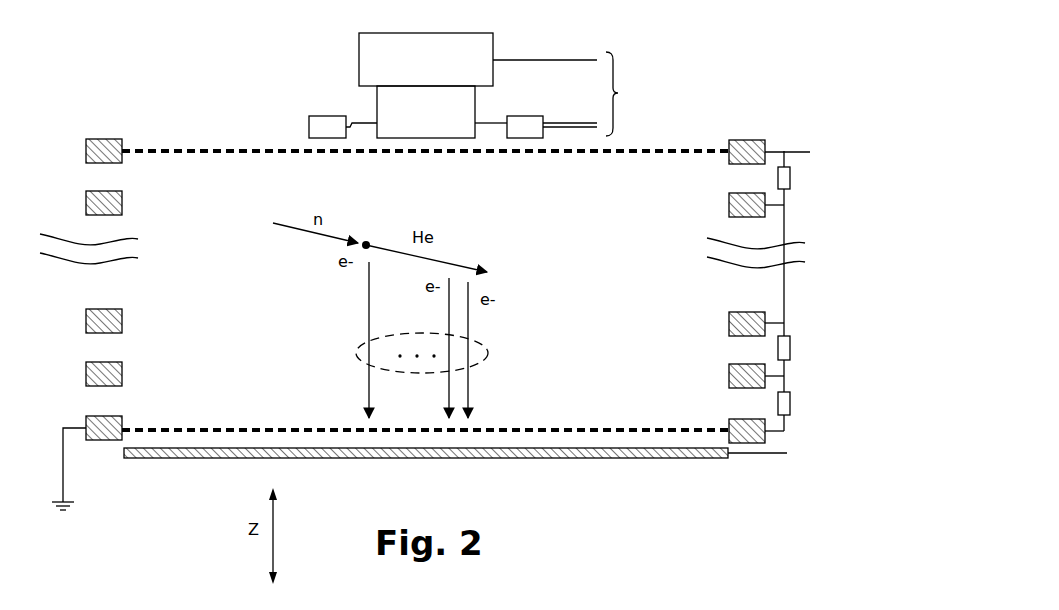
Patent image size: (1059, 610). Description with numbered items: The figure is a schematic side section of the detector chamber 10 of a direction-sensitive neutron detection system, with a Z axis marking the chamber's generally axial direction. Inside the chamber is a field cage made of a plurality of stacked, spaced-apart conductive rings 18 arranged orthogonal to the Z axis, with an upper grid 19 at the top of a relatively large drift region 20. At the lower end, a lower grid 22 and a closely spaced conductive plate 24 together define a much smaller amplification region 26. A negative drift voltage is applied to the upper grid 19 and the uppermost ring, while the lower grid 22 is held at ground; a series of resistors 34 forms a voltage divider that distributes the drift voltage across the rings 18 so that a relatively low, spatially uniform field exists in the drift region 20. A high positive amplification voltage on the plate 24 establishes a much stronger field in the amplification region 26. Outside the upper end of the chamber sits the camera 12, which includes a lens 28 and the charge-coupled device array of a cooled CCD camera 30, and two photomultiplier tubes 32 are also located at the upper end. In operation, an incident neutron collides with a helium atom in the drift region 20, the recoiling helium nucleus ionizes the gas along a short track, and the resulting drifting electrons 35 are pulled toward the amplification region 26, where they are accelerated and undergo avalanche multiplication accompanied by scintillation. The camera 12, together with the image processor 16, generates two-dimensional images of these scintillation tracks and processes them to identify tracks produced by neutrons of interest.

The detector chamber 10 is at (184, 62).
The camera 12 is at (343, 40).
The image processor 16 is at (601, 94).
The conductive rings 18 is at (122, 200).
The upper grid 19 is at (224, 148).
The drift region 20 is at (217, 279).
The lower grid 22 is at (639, 428).
The conductive plate 24 is at (657, 460).
The amplification region 26 is at (262, 432).
The lens 28 is at (426, 112).
The cooled CCD camera 30 is at (426, 59).
The photomultiplier tubes 32 is at (329, 116).
The resistors 34 is at (790, 180).
The drifting electrons 35 is at (357, 349).